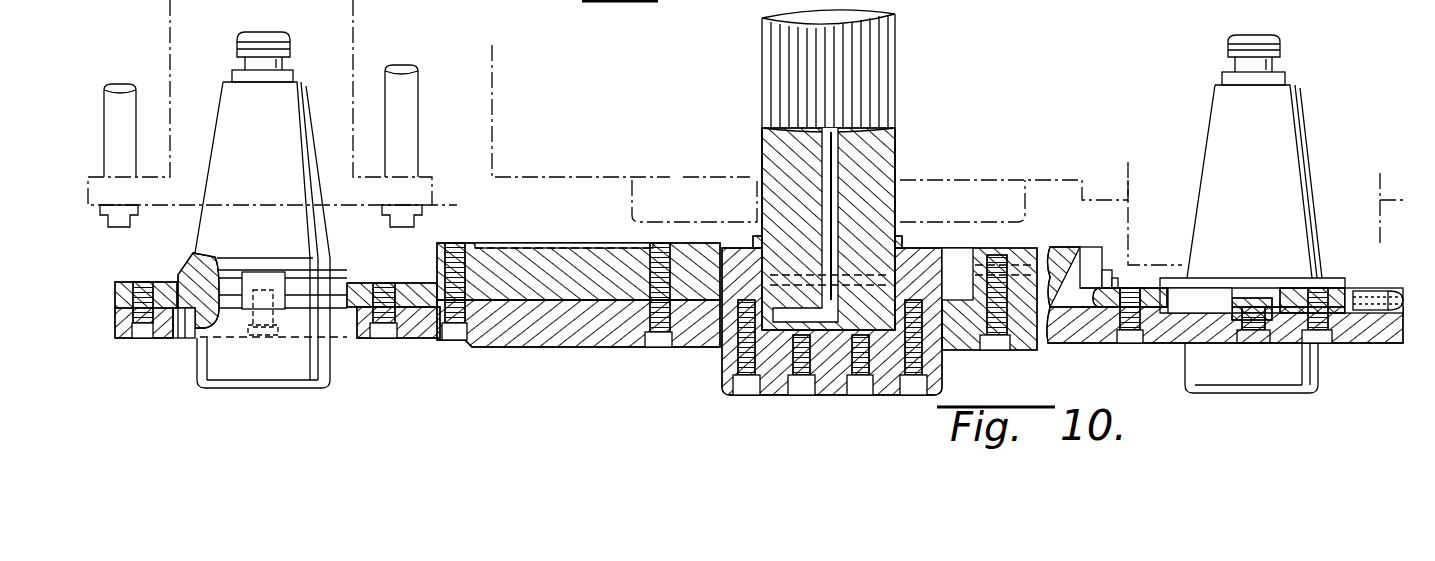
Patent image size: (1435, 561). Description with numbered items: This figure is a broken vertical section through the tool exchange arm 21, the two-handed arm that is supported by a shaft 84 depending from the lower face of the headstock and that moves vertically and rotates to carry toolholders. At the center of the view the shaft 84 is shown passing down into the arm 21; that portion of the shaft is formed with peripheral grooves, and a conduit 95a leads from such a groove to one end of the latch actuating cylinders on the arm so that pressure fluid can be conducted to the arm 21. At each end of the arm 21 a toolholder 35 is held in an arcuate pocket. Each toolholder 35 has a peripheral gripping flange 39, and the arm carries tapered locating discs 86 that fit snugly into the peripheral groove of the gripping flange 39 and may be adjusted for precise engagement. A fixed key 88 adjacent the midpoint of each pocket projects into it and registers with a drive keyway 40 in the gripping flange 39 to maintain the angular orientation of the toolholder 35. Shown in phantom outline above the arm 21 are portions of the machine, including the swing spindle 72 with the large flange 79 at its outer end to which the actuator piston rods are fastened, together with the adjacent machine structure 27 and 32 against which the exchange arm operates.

The tool exchange arm 21 is at (440, 345).
The machine spindle head 27 is at (1018, 0).
The machine frame outline 32 is at (617, 178).
The toolholder 35 is at (190, 366).
The gripping flange 39 is at (184, 276).
The drive keyway 40 is at (1241, 289).
The swing spindle 72 is at (333, 207).
The flange 79 is at (430, 196).
The shaft 84 is at (897, 80).
The locating disc 86 is at (116, 286).
The fixed key 88 is at (263, 280).
The conduit 95a is at (835, 172).